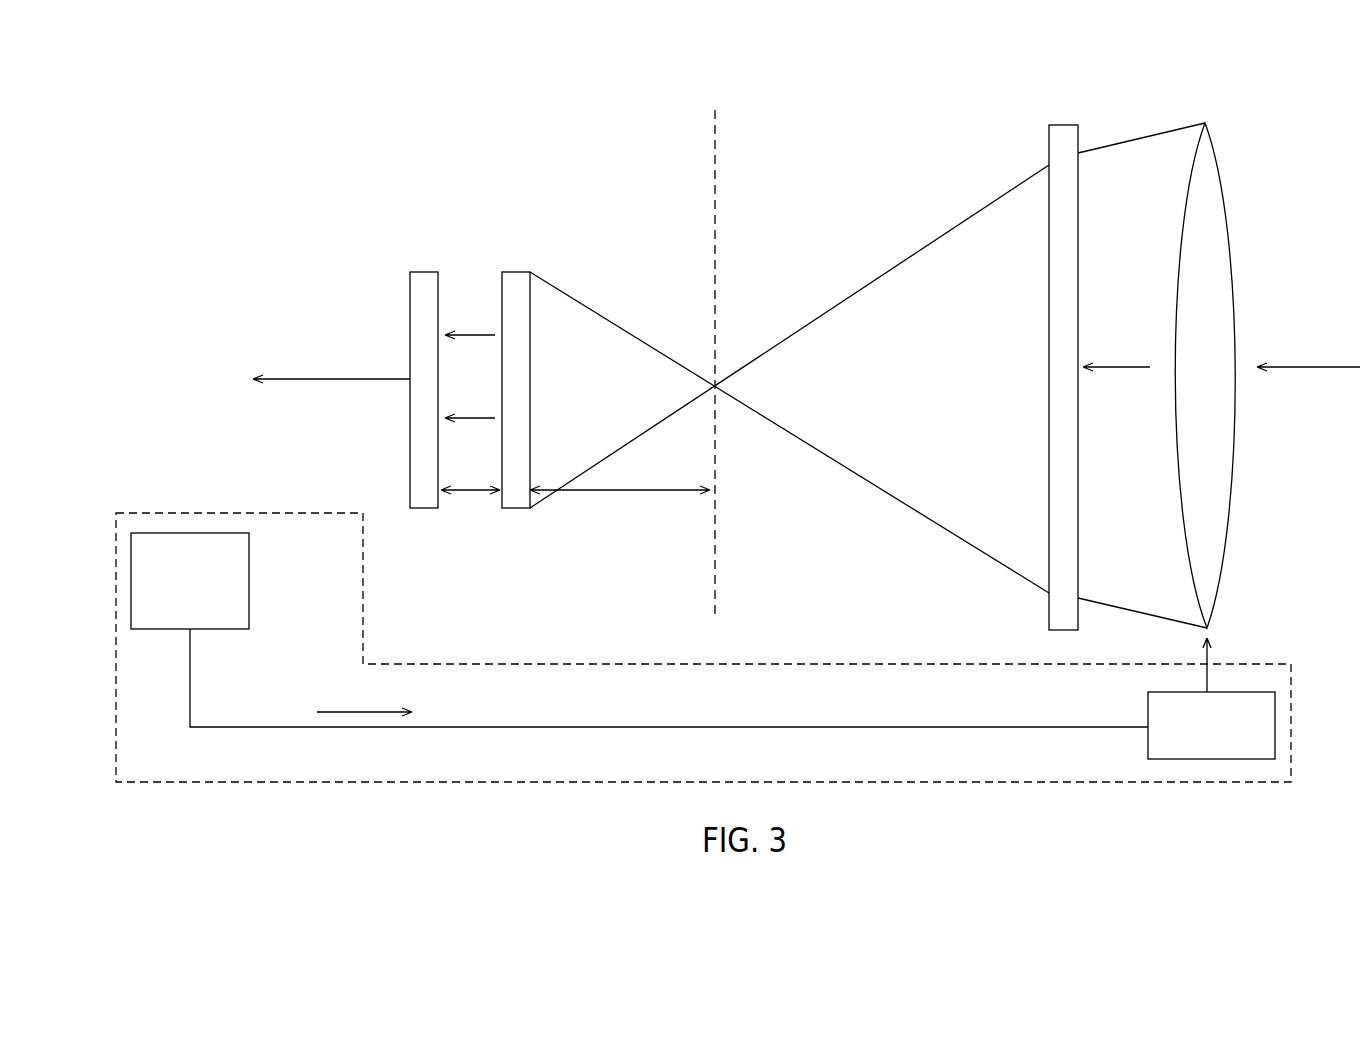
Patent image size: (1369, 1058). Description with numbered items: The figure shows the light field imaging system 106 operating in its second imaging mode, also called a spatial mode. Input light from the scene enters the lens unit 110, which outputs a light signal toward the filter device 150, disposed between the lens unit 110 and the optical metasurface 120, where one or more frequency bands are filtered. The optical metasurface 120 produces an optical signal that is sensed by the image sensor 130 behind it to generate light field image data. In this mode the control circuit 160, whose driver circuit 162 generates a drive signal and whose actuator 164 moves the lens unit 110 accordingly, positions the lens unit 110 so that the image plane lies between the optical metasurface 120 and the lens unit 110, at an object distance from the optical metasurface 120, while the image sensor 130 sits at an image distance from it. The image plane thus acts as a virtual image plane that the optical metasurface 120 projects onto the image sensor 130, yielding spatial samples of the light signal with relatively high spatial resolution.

The light field imaging system 106 is at (425, 106).
The lens unit 110 is at (1223, 158).
The optical metasurface 120 is at (510, 272).
The image sensor 130 is at (428, 272).
The filter device 150 is at (1065, 125).
The control circuit 160 is at (273, 512).
The driver circuit 162 is at (250, 600).
The actuator 164 is at (1275, 720).